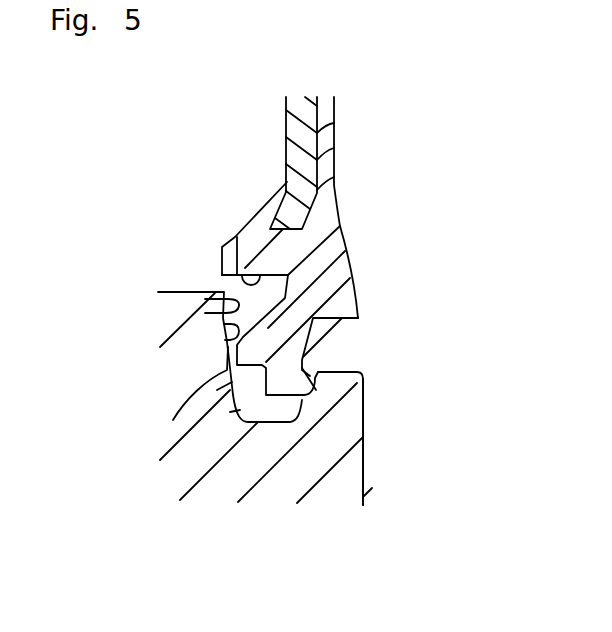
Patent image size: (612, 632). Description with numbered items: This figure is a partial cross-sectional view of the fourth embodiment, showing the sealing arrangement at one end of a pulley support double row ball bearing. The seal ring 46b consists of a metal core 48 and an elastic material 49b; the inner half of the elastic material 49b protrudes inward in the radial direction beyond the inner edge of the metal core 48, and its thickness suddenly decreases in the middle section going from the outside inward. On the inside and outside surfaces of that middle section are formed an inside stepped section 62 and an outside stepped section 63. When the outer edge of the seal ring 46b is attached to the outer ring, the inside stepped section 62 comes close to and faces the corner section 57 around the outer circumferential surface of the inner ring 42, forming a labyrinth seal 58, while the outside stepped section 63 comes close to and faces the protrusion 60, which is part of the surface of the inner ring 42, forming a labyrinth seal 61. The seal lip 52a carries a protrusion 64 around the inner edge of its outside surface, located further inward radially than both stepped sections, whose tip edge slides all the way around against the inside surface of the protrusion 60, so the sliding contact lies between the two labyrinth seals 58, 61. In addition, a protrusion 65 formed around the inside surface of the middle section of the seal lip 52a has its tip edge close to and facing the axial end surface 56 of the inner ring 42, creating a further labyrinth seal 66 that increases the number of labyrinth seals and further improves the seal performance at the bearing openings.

The metal core 48 is at (300, 162).
The seal ring 46b is at (320, 228).
The elastic material 49b is at (323, 273).
The inside stepped section 62 is at (237, 248).
The labyrinth seal 58 is at (235, 288).
The corner section 57 is at (222, 311).
The end surface 56 is at (230, 346).
The outside stepped section 63 is at (334, 317).
The seal lip 52a is at (327, 358).
The labyrinth seal 61 is at (295, 345).
The protrusion 60 is at (343, 384).
The protrusion 64 is at (318, 390).
The inner ring 42 is at (268, 458).
The labyrinth seal 66 is at (232, 382).
The protrusion 65 is at (240, 410).